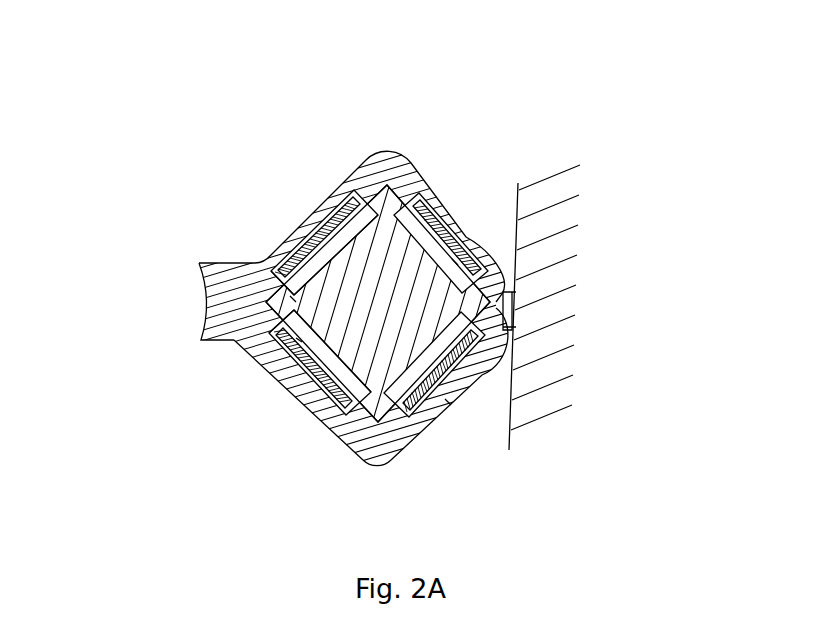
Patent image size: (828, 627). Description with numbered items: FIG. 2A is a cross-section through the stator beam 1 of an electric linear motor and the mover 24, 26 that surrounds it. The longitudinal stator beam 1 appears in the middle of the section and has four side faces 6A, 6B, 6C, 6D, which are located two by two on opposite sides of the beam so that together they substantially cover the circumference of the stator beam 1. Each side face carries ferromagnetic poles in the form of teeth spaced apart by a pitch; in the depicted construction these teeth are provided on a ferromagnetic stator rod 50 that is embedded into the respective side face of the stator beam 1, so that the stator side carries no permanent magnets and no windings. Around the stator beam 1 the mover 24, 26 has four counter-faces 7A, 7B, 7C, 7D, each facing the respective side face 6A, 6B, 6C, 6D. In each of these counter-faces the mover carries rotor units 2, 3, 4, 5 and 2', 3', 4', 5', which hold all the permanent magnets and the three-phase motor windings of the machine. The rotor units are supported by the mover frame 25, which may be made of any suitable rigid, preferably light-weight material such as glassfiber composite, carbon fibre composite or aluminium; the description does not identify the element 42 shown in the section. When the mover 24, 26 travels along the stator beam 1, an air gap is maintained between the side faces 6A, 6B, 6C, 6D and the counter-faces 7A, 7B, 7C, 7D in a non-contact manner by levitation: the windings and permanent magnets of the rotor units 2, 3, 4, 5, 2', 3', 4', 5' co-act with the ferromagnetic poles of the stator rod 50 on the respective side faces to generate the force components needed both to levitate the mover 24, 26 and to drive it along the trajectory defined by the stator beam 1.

The stator beam 1 is at (388, 237).
The rotor unit 2 is at (402, 165).
The rotor unit 3 is at (400, 302).
The rotor unit 2' is at (449, 421).
The rotor unit 3' is at (402, 440).
The rotor unit 4 is at (277, 403).
The rotor unit 5 is at (279, 372).
The rotor unit 4' is at (299, 234).
The rotor unit 5' is at (298, 255).
The side face 6A is at (472, 213).
The side face 6B is at (325, 415).
The side face 6C is at (458, 345).
The side face 6D is at (367, 205).
The counter-face 7A is at (453, 217).
The counter-face 7B is at (352, 435).
The counter-face 7C is at (485, 340).
The counter-face 7D is at (333, 205).
The mover 24 is at (175, 244).
The mover 26 is at (194, 250).
The mover frame 25 is at (290, 375).
The connecting web 42 is at (278, 249).
The stator rod 50 is at (455, 262).